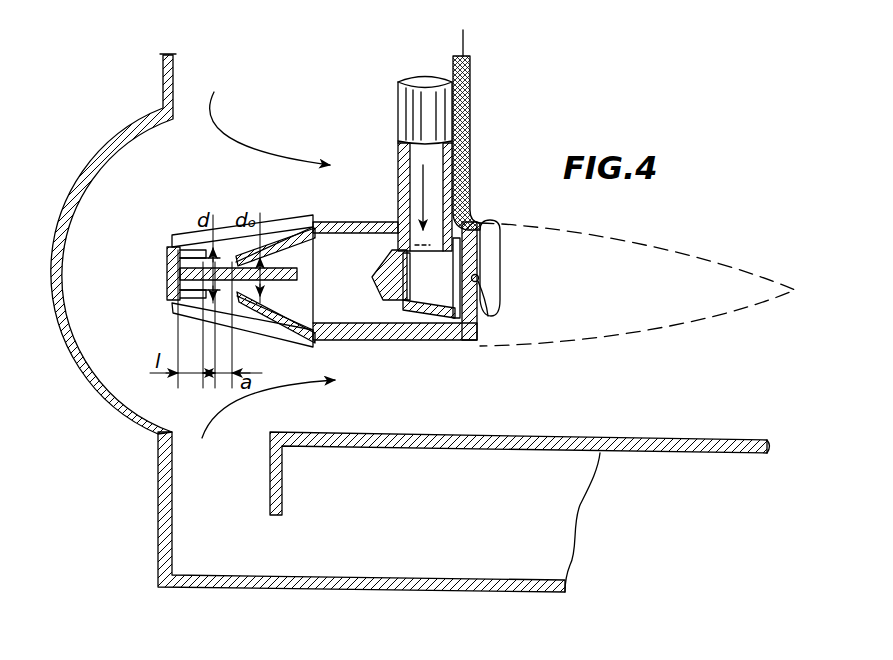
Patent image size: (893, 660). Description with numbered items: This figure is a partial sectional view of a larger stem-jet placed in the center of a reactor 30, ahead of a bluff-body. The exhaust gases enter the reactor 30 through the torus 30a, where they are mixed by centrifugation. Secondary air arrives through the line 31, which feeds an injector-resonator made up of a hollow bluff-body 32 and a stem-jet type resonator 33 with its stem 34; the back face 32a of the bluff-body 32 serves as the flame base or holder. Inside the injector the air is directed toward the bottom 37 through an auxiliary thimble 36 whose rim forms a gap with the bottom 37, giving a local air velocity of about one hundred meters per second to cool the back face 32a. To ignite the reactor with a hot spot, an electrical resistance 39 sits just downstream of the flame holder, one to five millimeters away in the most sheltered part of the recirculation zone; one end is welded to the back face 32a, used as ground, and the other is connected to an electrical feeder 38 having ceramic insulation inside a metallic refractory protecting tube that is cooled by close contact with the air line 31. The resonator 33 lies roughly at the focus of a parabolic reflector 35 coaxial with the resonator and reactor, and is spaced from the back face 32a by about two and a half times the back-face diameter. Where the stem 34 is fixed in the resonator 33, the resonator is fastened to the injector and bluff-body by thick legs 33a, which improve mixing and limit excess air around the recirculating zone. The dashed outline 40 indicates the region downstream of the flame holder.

The reactor 30 is at (683, 455).
The torus 30a is at (250, 588).
The secondary air line 31 is at (423, 115).
The hollow bluff-body 32 is at (380, 221).
The back face of the bluff-body 32a is at (482, 343).
The stem-jet type resonator 33 is at (156, 258).
The thick legs 33a is at (225, 234).
The stem 34 is at (287, 267).
The parabolic reflector 35 is at (107, 402).
The auxiliary thimble 36 is at (377, 297).
The bottom of the injector 37 is at (472, 317).
The electrical feeder 38 is at (469, 117).
The electrical resistance 39 is at (530, 200).
The spray pattern 40 is at (670, 330).